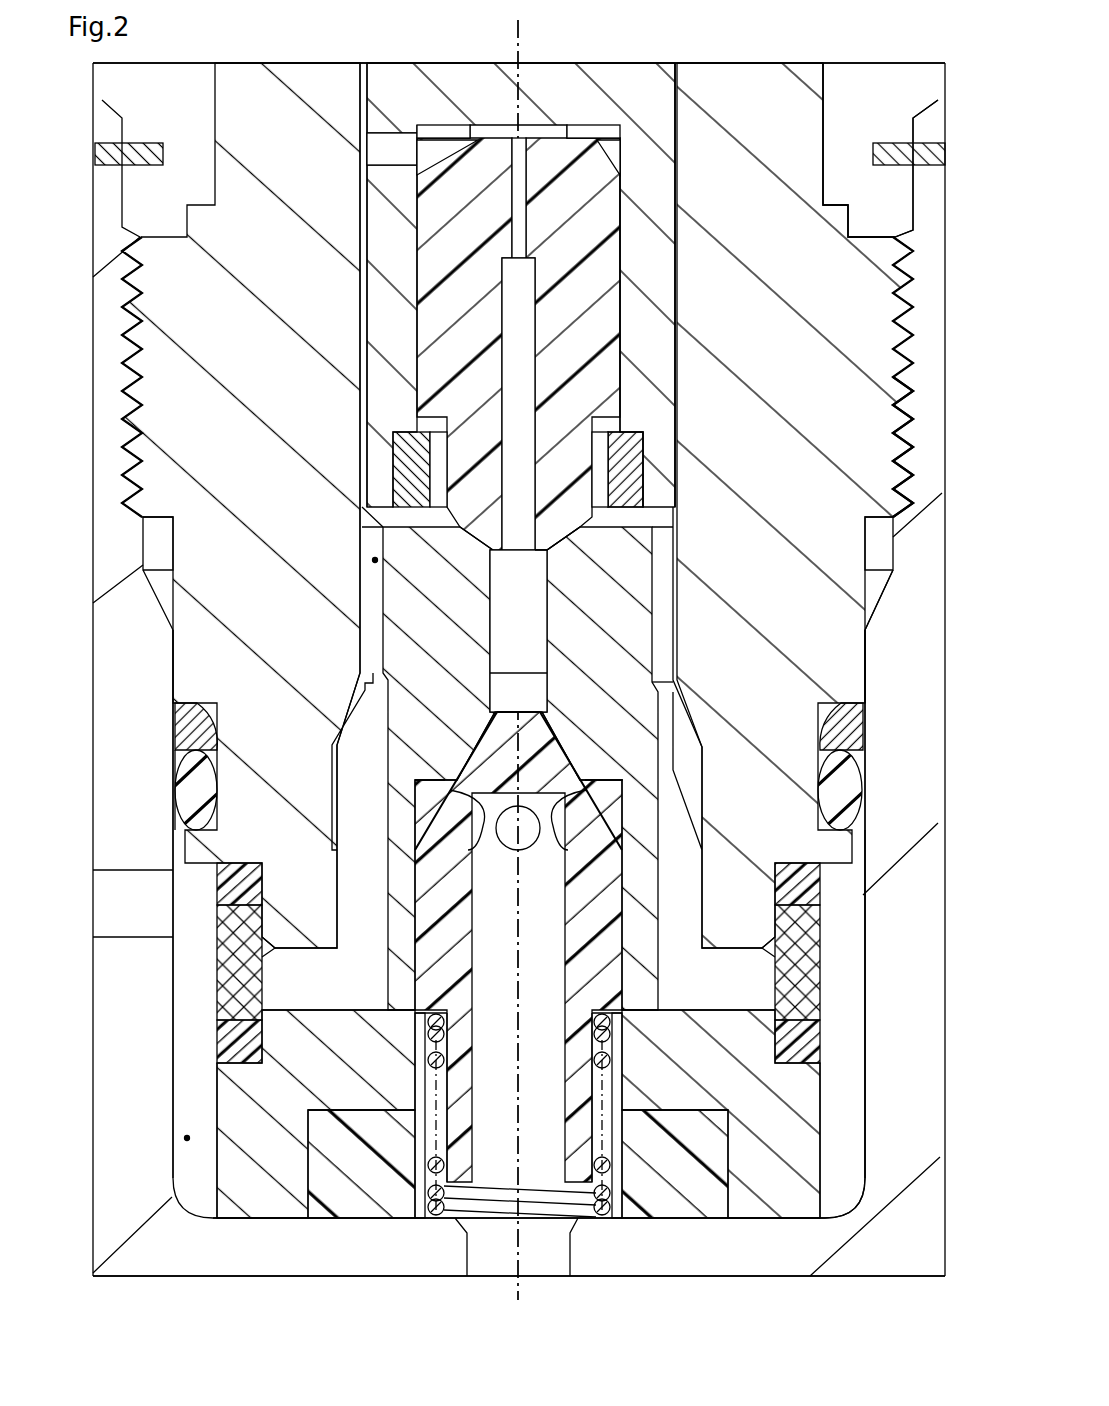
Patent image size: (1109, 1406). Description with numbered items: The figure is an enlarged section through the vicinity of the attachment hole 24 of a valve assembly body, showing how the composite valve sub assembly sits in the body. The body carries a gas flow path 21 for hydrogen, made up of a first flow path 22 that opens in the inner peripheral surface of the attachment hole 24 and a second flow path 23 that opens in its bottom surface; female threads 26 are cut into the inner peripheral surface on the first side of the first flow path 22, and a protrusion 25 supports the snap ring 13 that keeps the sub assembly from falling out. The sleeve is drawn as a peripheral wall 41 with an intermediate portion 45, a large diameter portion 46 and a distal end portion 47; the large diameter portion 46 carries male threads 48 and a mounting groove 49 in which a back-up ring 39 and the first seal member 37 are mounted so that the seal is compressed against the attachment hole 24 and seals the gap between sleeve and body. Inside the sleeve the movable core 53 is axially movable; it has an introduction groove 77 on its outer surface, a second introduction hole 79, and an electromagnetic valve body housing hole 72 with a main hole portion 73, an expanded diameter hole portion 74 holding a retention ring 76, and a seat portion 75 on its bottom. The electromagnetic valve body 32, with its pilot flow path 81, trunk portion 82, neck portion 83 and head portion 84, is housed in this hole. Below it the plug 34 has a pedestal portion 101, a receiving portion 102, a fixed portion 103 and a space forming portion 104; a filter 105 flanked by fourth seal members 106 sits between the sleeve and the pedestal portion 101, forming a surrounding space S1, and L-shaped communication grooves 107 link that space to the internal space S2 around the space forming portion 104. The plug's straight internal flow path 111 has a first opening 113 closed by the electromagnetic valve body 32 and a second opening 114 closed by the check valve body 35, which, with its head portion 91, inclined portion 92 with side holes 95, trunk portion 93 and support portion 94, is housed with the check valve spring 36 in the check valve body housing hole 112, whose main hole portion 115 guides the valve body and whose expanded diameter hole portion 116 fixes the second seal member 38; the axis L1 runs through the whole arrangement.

The snap ring 13 is at (137, 150).
The gas flow path 21 is at (519, 669).
The first flow path 22 is at (130, 870).
The second flow path 23 is at (560, 1250).
The attachment hole 24 is at (860, 1085).
The protrusion 25 is at (922, 195).
The female threads 26 is at (925, 340).
The electromagnetic valve body 32 is at (448, 132).
The plug 34 is at (372, 523).
The check valve body 35 is at (418, 1178).
The check valve spring 36 is at (433, 1215).
The first seal member 37 is at (178, 772).
The second seal member 38 is at (722, 1205).
The back-up ring 39 is at (178, 735).
The peripheral wall 41 is at (859, 620).
The intermediate portion 45 is at (822, 108).
The large diameter portion 46 is at (857, 650).
The distal end portion 47 is at (757, 925).
The male threads 48 is at (912, 440).
The mounting groove 49 is at (827, 790).
The movable core 53 is at (412, 62).
The electromagnetic valve body housing hole 72 is at (521, 285).
The main hole portion 73 is at (613, 305).
The expanded diameter hole portion 74 is at (640, 458).
The seat portion 75 is at (563, 133).
The retention ring 76 is at (637, 487).
The introduction groove 77 is at (362, 297).
The second introduction hole 79 is at (383, 160).
The pilot flow path 81 is at (532, 323).
The trunk portion 82 is at (608, 243).
The neck portion 83 is at (605, 450).
The head portion 84 is at (556, 540).
The head portion 91 is at (477, 760).
The inclined portion 92 is at (430, 843).
The trunk portion 93 is at (427, 917).
The support portion 94 is at (448, 1088).
The side holes 95 is at (533, 832).
The pedestal portion 101 is at (810, 1147).
The receiving portion 102 is at (760, 1038).
The fixed portion 103 is at (730, 905).
The space forming portion 104 is at (640, 637).
The filter 105 is at (222, 968).
The fourth seal members 106 is at (222, 897).
The communication grooves 107 is at (686, 1005).
The internal flow path 111 is at (540, 628).
The check valve body housing hole 112 is at (338, 1060).
The first opening 113 is at (490, 543).
The second opening 114 is at (490, 733).
The main hole portion 115 is at (420, 1038).
The expanded diameter hole portion 116 is at (313, 1120).
The surrounding space S1 is at (184, 1138).
The internal space S2 is at (372, 560).
The axis L1 is at (522, 47).